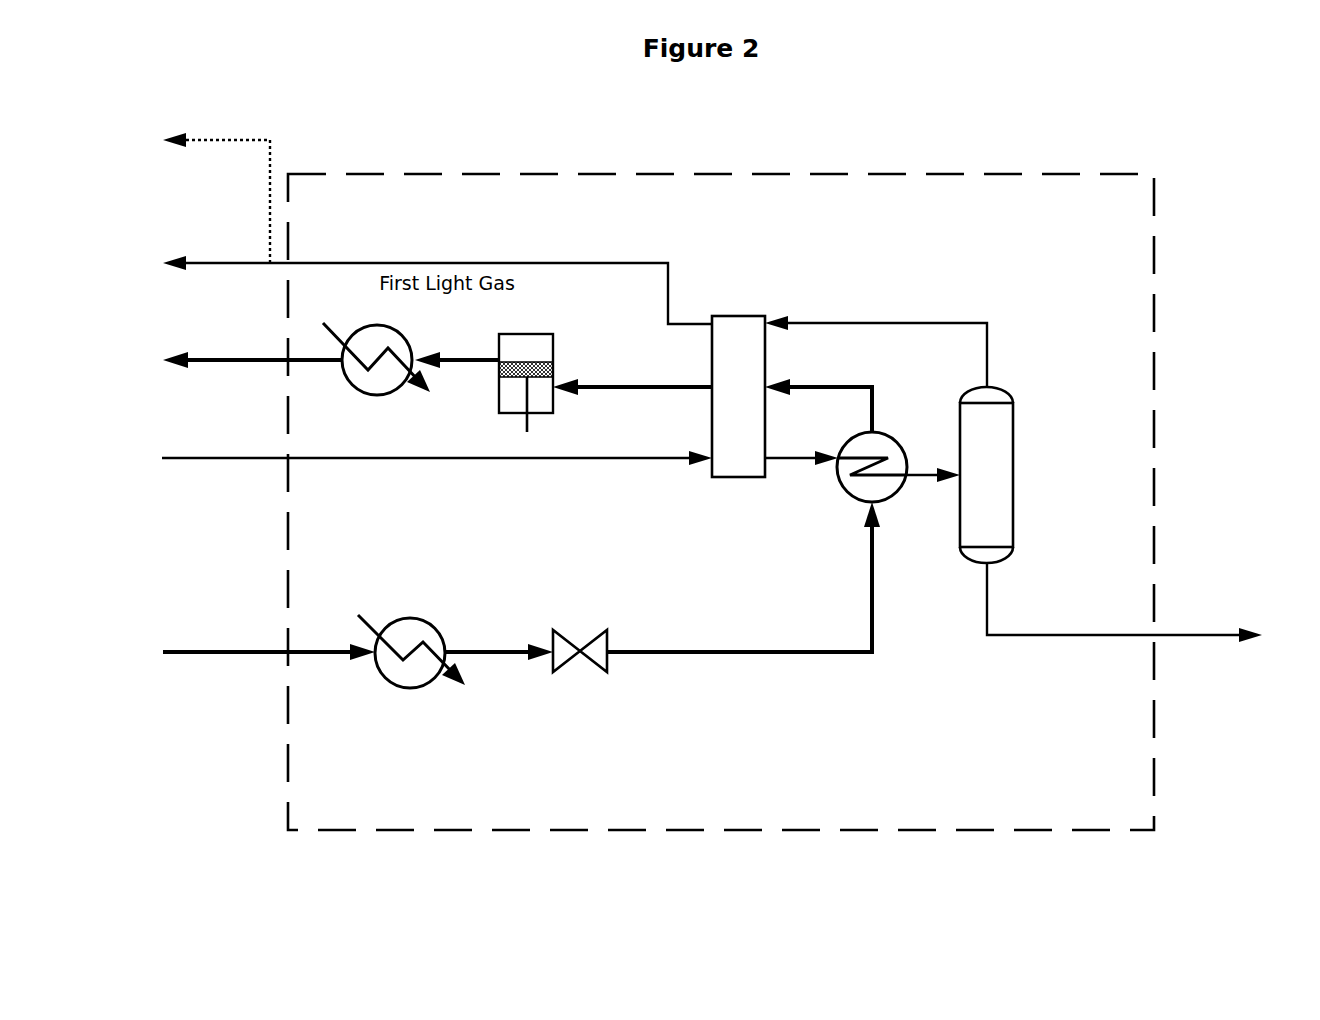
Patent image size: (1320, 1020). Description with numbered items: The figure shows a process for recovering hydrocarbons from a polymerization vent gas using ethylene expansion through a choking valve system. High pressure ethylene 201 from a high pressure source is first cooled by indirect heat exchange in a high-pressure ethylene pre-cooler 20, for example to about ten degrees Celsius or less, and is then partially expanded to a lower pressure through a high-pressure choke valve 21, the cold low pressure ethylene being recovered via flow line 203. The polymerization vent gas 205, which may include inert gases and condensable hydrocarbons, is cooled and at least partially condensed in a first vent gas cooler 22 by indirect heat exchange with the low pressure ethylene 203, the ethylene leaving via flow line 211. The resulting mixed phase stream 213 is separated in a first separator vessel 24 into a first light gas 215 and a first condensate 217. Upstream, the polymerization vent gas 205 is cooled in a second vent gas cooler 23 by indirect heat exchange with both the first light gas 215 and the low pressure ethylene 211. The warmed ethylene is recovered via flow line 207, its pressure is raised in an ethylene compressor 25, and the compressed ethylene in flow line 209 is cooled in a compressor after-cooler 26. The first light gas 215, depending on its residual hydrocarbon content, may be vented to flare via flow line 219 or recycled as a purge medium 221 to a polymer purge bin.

The high-pressure ethylene pre-cooler 20 is at (400, 618).
The high-pressure choke valve 21 is at (567, 630).
The first vent gas cooler 22 is at (848, 497).
The second vent gas cooler 23 is at (738, 396).
The first separator vessel 24 is at (986, 475).
The ethylene compressor 25 is at (517, 334).
The compressor after-cooler 26 is at (385, 325).
The high pressure ethylene 201 is at (263, 652).
The low pressure ethylene flow line 203 is at (743, 577).
The polymerization vent gas 205 is at (484, 472).
The ethylene flow line 207 is at (632, 387).
The compressed ethylene flow line 209 is at (321, 377).
The low pressure ethylene flow line 211 is at (818, 395).
The mixed phase stream 213 is at (933, 463).
The first light gas 215 is at (876, 341).
The first condensate 217 is at (1143, 602).
The flare flow line 219 is at (216, 186).
The purge medium 221 is at (437, 278).